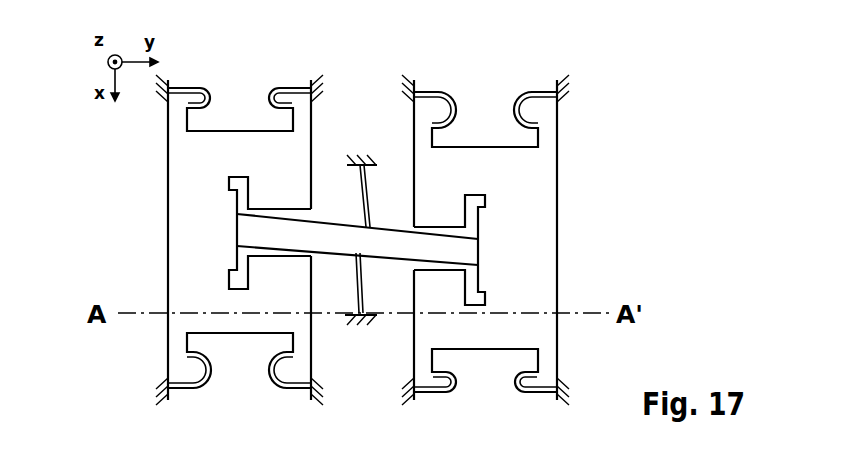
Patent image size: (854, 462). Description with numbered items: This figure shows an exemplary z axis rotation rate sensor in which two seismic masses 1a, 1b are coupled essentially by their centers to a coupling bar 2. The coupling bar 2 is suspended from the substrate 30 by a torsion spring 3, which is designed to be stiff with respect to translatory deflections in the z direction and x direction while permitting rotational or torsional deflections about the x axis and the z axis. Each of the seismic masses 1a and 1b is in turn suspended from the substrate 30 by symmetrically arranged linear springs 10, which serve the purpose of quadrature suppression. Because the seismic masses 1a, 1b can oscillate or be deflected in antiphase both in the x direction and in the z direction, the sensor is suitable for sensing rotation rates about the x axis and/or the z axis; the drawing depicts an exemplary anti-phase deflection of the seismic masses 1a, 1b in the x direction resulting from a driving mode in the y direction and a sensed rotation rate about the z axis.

The seismic mass 1a is at (168, 213).
The seismic mass 1b is at (563, 213).
The coupling bar 2 is at (330, 232).
The torsion spring 3 is at (378, 213).
The linear springs 10 is at (273, 83).
The substrate 30 is at (360, 328).